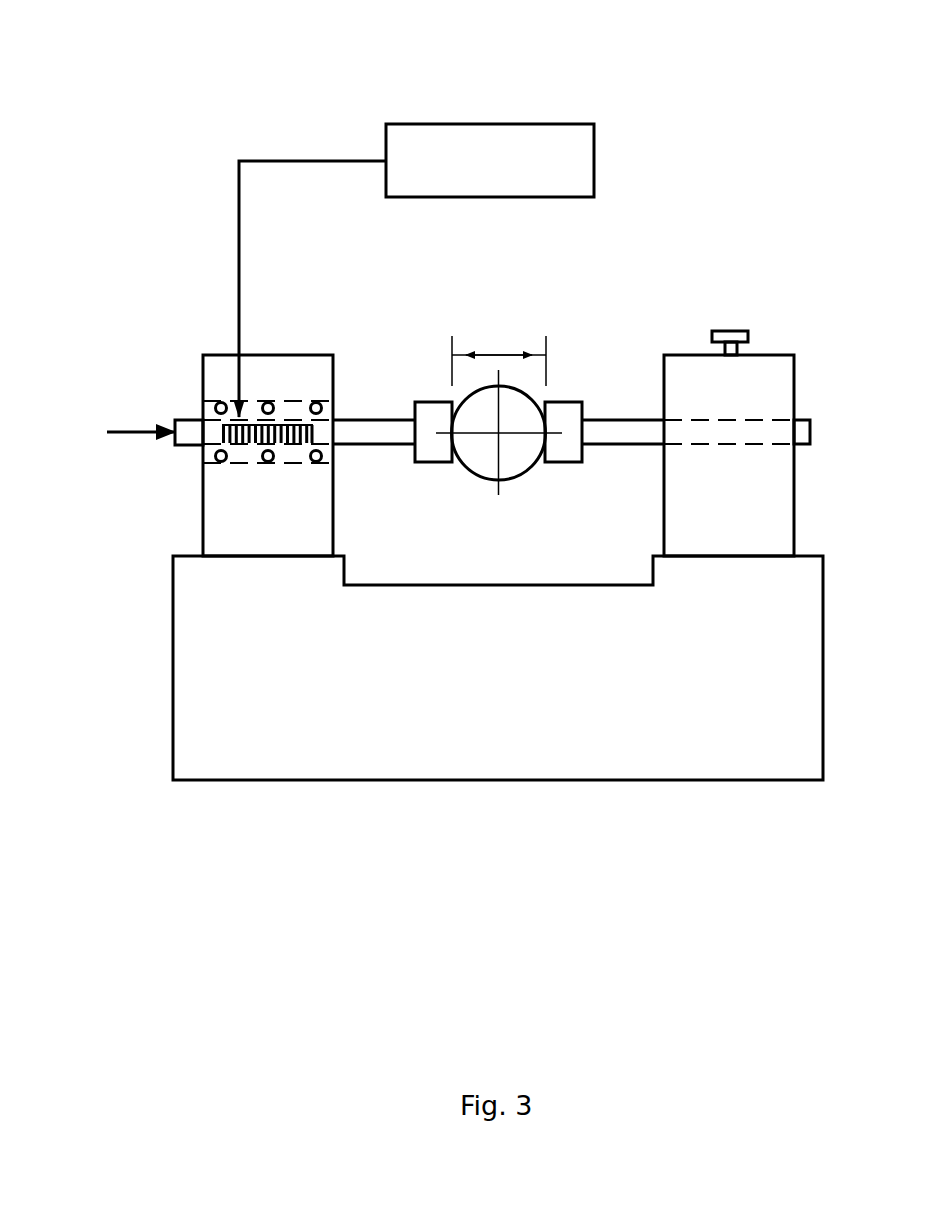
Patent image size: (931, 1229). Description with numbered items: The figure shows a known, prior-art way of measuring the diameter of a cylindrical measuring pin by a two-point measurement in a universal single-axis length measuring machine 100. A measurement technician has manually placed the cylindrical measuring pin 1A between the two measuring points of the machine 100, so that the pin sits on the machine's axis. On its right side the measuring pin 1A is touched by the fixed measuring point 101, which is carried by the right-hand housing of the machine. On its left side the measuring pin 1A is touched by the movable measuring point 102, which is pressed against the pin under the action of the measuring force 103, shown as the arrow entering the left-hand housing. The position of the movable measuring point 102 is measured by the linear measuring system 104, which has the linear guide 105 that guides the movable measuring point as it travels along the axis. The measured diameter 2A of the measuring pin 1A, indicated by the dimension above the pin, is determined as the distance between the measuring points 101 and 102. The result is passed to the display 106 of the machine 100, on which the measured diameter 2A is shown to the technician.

The universal single-axis length measuring machine 100 is at (253, 77).
The fixed measuring point 101 is at (567, 402).
The movable measuring point 102 is at (429, 402).
The measuring force 103 is at (140, 430).
The linear measuring system 104 is at (222, 436).
The linear guide 105 is at (218, 403).
The display 106 is at (450, 124).
The cylindrical measuring pin 1A is at (532, 495).
The measured diameter 2A is at (500, 353).